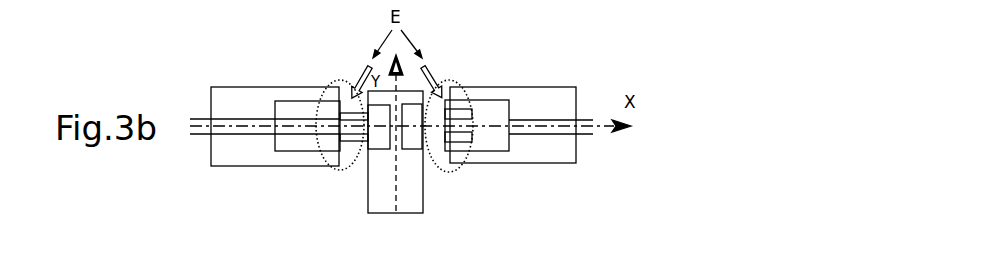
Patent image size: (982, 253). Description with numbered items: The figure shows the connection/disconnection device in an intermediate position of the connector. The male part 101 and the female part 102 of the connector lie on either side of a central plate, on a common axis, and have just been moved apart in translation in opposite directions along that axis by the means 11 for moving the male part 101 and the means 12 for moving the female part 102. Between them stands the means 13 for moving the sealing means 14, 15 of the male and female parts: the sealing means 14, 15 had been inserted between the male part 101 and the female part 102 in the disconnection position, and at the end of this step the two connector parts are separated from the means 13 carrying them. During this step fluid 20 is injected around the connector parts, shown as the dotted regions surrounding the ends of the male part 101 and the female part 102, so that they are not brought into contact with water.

The means for moving the male part 11 is at (228, 158).
The means for moving the female part 12 is at (537, 158).
The means for moving the sealing means 13 is at (410, 207).
The sealing means 14 is at (380, 143).
The sealing means 15 is at (412, 143).
The fluid 20 is at (348, 80).
The male part 101 is at (283, 108).
The female part 102 is at (503, 110).